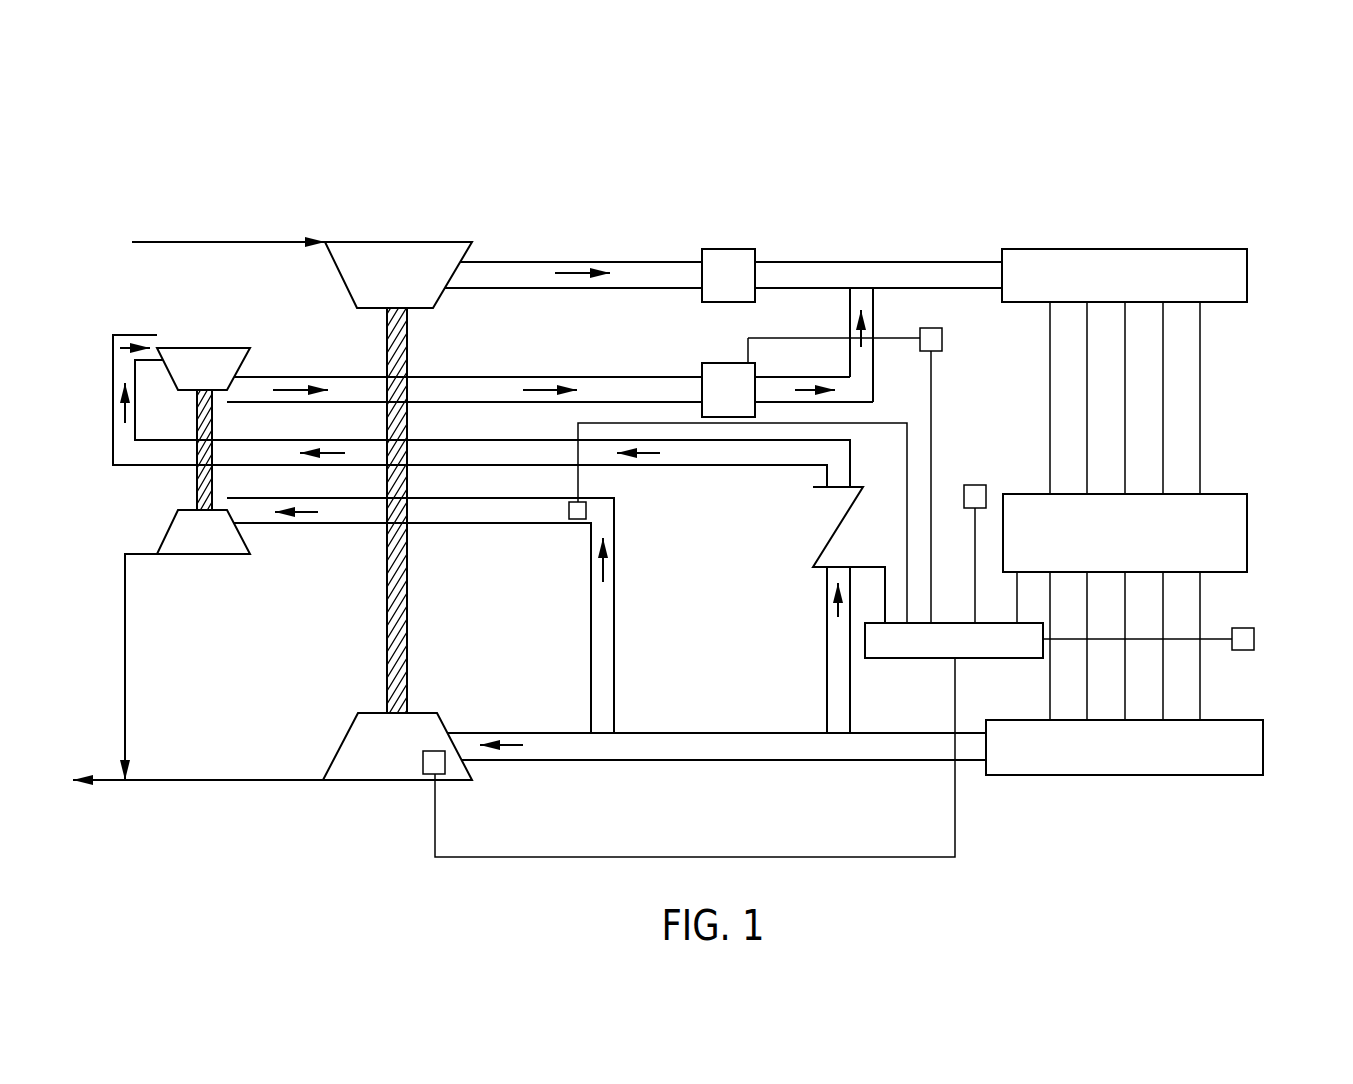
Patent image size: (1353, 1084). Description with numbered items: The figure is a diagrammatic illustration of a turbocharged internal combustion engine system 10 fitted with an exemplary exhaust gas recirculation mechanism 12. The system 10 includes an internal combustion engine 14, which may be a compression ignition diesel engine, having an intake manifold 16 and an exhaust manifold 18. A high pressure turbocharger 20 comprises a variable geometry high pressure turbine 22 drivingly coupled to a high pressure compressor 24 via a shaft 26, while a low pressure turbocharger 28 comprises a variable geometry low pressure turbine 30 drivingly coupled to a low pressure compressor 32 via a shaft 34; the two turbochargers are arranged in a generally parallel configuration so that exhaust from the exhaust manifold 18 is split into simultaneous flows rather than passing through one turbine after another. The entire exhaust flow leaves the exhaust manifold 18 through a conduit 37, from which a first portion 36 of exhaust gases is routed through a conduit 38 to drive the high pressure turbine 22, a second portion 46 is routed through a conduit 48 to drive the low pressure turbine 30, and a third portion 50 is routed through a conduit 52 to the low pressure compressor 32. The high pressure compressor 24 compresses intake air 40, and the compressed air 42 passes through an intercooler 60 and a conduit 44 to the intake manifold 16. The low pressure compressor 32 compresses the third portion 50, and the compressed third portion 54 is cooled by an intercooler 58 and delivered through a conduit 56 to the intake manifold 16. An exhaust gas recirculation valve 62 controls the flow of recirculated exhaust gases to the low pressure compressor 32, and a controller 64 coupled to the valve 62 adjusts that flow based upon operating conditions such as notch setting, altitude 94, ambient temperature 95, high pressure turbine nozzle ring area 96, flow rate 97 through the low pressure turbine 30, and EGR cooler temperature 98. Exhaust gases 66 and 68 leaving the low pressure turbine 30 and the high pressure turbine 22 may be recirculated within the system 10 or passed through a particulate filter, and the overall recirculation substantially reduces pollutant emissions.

The turbocharged internal combustion engine system 10 is at (1240, 117).
The exhaust gas recirculation mechanism 12 is at (713, 627).
The internal combustion engine 14 is at (1247, 532).
The intake manifold 16 is at (1247, 275).
The exhaust manifold 18 is at (1263, 745).
The high pressure turbocharger 20 is at (400, 511).
The variable geometry high pressure turbine 22 is at (365, 782).
The high pressure compressor 24 is at (397, 242).
The shaft 26 is at (408, 597).
The low pressure turbocharger 28 is at (184, 452).
The variable geometry low pressure turbine 30 is at (203, 557).
The low pressure compressor 32 is at (202, 348).
The shaft 34 is at (197, 498).
The first portion of exhaust gases 36 is at (510, 745).
The conduit 37 is at (743, 788).
The conduit 38 is at (517, 763).
The intake air 40 is at (158, 244).
The compressed air 42 is at (580, 262).
The conduit 44 is at (800, 262).
The second portion of exhaust gases 46 is at (598, 572).
The conduit 48 is at (615, 633).
The third portion of exhaust gases 50 is at (647, 455).
The conduit 52 is at (692, 468).
The compressed third portion 54 is at (553, 377).
The conduit 56 is at (803, 377).
The intercooler 58 is at (712, 363).
The intercooler 60 is at (715, 249).
The exhaust gas recirculation valve 62 is at (855, 487).
The controller 64 is at (905, 660).
The exhaust gases 66 is at (125, 667).
The exhaust gases 68 is at (238, 778).
The altitude 94 is at (1254, 639).
The ambient temperature 95 is at (980, 485).
The high pressure turbine nozzle ring area 96 is at (422, 765).
The flow rate 97 is at (578, 520).
The EGR cooler temperature 98 is at (942, 340).